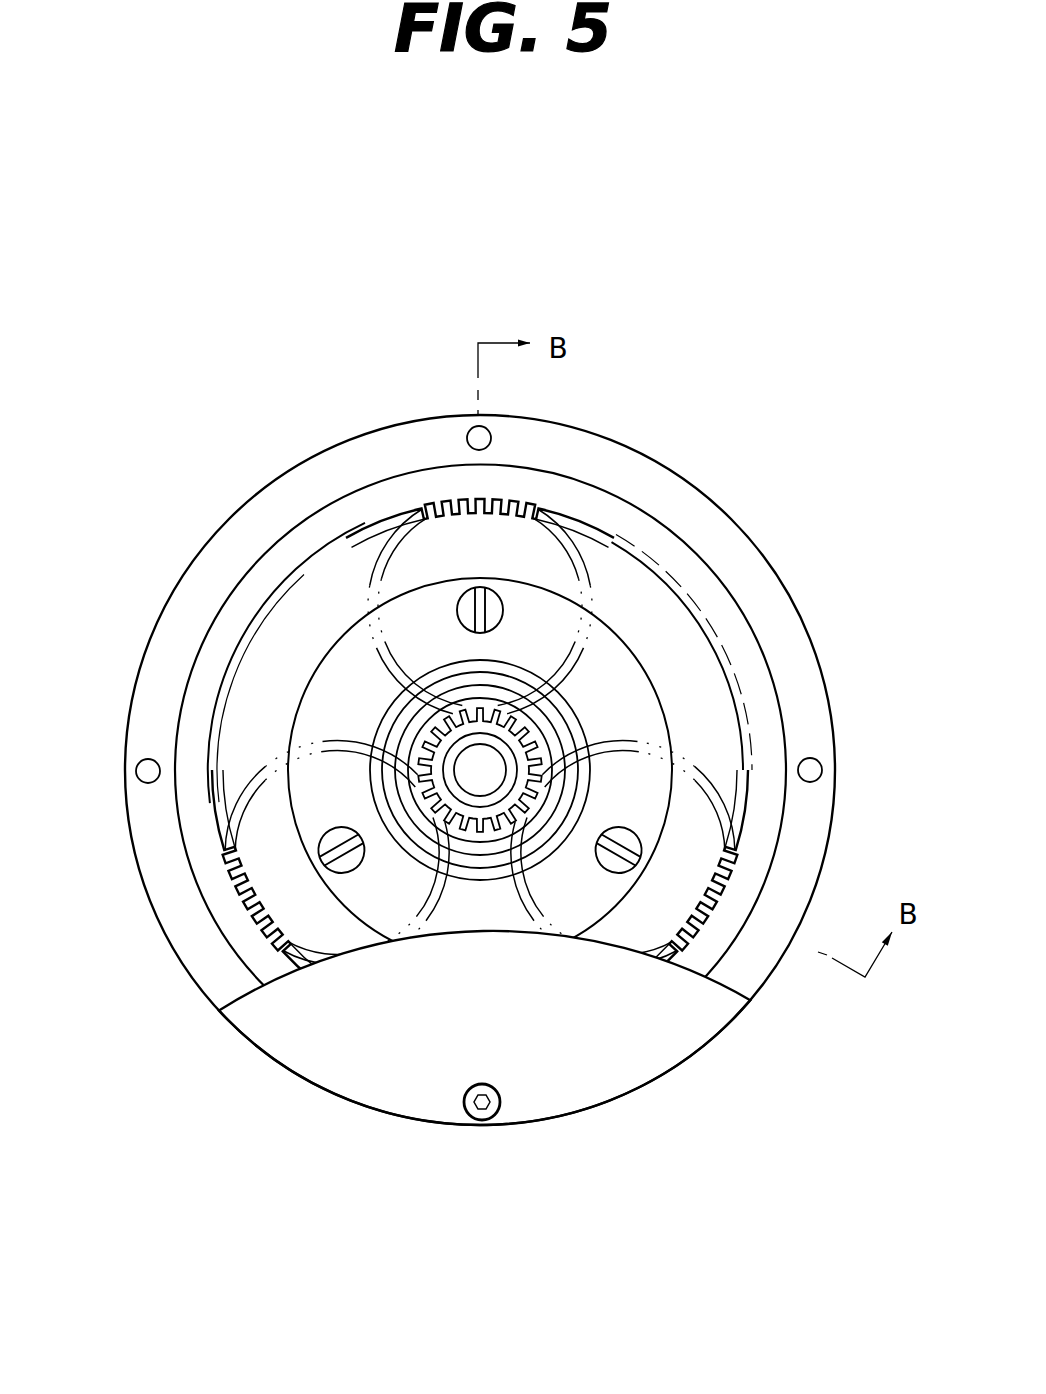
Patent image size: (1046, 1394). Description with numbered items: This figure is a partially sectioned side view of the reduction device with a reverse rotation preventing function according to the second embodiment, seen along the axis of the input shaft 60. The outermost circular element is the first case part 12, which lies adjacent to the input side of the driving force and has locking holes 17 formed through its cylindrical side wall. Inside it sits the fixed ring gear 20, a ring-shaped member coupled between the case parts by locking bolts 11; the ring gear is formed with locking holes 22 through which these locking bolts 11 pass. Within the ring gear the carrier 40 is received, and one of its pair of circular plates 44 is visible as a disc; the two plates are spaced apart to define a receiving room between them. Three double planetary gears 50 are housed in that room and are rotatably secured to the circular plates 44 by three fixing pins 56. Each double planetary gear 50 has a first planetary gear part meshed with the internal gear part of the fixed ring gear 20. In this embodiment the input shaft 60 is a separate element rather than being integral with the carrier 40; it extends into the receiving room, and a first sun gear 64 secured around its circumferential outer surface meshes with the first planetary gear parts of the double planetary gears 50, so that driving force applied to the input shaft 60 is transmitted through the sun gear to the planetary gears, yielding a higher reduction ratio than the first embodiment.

The locking bolt 11 is at (483, 1112).
The first case part 12 is at (560, 1058).
The locking hole 17 is at (463, 1106).
The fixed ring gear 20 is at (798, 678).
The locking hole 22 is at (467, 437).
The carrier 40 is at (353, 622).
The circular plate 44 is at (330, 680).
The double planetary gear 50 is at (523, 497).
The fixing pin 56 is at (493, 592).
The input shaft 60 is at (518, 745).
The first sun gear 64 is at (522, 710).